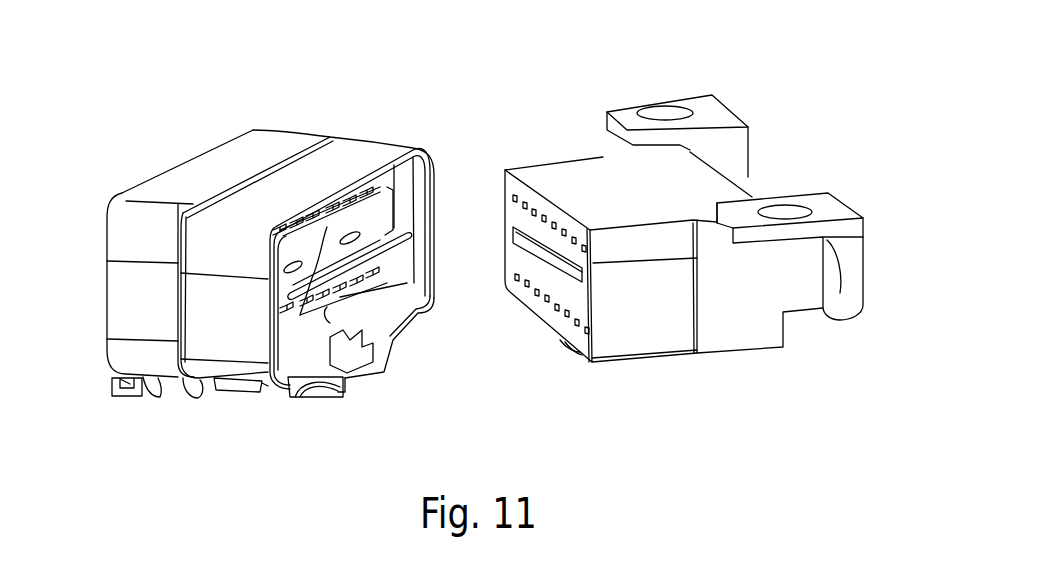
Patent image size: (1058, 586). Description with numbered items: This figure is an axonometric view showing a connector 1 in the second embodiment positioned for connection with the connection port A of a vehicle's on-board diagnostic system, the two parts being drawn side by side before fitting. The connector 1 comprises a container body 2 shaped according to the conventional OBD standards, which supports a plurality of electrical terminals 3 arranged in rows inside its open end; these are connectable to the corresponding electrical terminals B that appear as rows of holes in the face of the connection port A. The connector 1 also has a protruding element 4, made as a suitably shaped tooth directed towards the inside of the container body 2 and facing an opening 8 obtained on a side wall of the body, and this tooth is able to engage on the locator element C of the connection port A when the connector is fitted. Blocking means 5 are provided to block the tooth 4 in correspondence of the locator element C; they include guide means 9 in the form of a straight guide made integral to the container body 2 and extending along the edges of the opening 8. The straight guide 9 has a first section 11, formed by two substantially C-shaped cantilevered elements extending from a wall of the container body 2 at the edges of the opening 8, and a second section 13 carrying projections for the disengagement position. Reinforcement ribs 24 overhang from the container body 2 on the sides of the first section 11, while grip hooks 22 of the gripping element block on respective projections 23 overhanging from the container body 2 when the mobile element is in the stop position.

The connector 1 is at (264, 269).
The container body 2 is at (285, 234).
The electrical terminals 3 is at (394, 228).
The protruding element 4 is at (372, 328).
The blocking means 5 is at (108, 408).
The opening 8 is at (405, 302).
The guide means 9 is at (314, 442).
The first section 11 is at (348, 390).
The second section 13 is at (220, 387).
The grip hooks 22 is at (163, 390).
The projections 23 is at (188, 383).
The reinforcement ribs 24 is at (293, 380).
The connection port A is at (686, 225).
The electrical terminals B is at (533, 207).
The locator element C is at (560, 350).